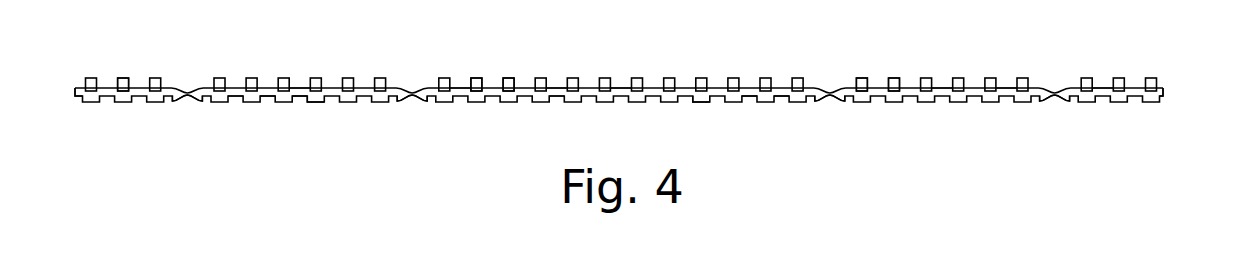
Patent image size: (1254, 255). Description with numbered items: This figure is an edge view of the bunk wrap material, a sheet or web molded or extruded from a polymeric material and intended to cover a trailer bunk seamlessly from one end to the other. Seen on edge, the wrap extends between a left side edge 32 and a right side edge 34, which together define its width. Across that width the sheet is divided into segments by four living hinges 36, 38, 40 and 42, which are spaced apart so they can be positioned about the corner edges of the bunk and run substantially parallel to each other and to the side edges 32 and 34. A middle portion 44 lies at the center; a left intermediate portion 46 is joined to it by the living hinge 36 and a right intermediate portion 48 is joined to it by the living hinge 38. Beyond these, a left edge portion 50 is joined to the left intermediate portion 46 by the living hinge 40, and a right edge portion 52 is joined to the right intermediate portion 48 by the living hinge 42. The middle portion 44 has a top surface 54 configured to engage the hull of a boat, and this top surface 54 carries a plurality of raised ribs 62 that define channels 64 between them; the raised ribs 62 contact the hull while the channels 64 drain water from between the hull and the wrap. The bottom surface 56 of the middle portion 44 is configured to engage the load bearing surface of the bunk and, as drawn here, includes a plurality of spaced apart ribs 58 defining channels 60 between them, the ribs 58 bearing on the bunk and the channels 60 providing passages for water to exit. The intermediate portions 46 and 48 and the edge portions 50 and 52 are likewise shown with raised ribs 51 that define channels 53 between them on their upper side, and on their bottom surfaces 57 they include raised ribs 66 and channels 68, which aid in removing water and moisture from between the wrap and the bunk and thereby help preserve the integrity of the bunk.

The left side edge 32 is at (75, 91).
The right side edge 34 is at (1163, 92).
The living hinge 36 is at (417, 98).
The living hinge 38 is at (839, 98).
The living hinge 40 is at (191, 100).
The living hinge 42 is at (1046, 99).
The middle portion 44 is at (620, 87).
The left intermediate portion 46 is at (300, 88).
The right intermediate portion 48 is at (943, 86).
The left edge portion 50 is at (128, 78).
The raised ribs 51 is at (893, 78).
The right edge portion 52 is at (1101, 86).
The channels 53 is at (1006, 86).
The top surface 54 is at (554, 87).
The bottom surface 56 is at (555, 101).
The bottom surfaces 57 is at (235, 101).
The spaced apart ribs 58 is at (777, 99).
The channels 60 is at (702, 101).
The raised ribs 62 is at (508, 78).
The channels 64 is at (462, 87).
The raised ribs 66 is at (297, 102).
The channels 68 is at (316, 102).